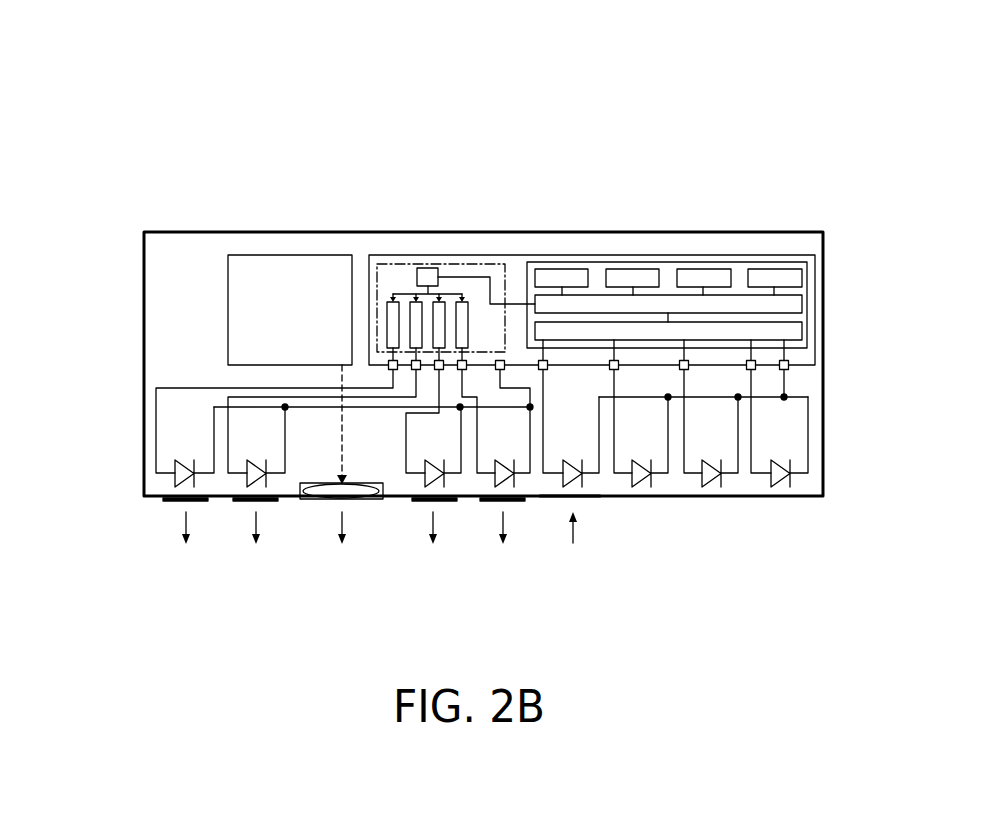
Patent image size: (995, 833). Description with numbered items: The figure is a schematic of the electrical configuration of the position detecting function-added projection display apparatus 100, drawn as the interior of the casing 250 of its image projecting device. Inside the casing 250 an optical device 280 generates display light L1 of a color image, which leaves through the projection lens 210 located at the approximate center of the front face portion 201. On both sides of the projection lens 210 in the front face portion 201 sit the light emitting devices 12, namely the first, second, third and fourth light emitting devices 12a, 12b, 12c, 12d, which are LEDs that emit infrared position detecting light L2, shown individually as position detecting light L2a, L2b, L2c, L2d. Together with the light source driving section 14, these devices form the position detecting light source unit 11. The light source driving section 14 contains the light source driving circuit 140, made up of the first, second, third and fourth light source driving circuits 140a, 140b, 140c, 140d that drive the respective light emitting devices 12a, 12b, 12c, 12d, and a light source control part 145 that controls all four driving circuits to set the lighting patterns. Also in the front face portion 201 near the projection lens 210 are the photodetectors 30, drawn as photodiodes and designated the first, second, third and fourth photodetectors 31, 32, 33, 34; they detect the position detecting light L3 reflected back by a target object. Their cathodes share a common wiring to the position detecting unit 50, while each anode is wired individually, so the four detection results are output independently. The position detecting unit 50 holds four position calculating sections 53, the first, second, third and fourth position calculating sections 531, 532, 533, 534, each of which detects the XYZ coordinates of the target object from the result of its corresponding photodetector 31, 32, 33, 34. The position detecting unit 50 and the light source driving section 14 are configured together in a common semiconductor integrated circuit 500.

The position detecting function-added projection display apparatus 100 is at (126, 236).
The casing 250 is at (824, 452).
The optical device 280 is at (247, 255).
The projection lens 210 is at (325, 493).
The front face portion 201 is at (553, 480).
The semiconductor integrated circuit 500 is at (505, 262).
The position detecting light source unit 11 is at (414, 376).
The light source driving section 14 is at (476, 264).
The light source control part 145 is at (422, 268).
The light source driving circuit 140 is at (393, 154).
The first light source driving circuit 140a is at (437, 317).
The second light source driving circuit 140b is at (392, 327).
The third light source driving circuit 140c is at (415, 320).
The fourth light source driving circuit 140d is at (460, 318).
The light emitting devices 12 is at (301, 477).
The first light emitting device 12a is at (413, 478).
The second light emitting device 12b is at (185, 460).
The third light emitting device 12c is at (258, 460).
The fourth light emitting device 12d is at (483, 478).
The position detecting unit 50 is at (805, 262).
The position calculating sections 53 is at (653, 167).
The first position calculating section 531 is at (558, 269).
The second position calculating section 532 is at (623, 269).
The third position calculating section 533 is at (705, 269).
The fourth position calculating section 534 is at (783, 269).
The photodetector 30 is at (681, 488).
The first photodetector 31 is at (580, 484).
The second photodetector 32 is at (642, 487).
The third photodetector 33 is at (708, 488).
The fourth photodetector 34 is at (782, 488).
The display light L1 is at (353, 454).
The position detecting light L2 is at (367, 533).
The position detecting light L2a is at (455, 533).
The position detecting light L2b is at (209, 533).
The position detecting light L2c is at (279, 533).
The position detecting light L2d is at (525, 533).
The position detecting light L3 is at (586, 530).